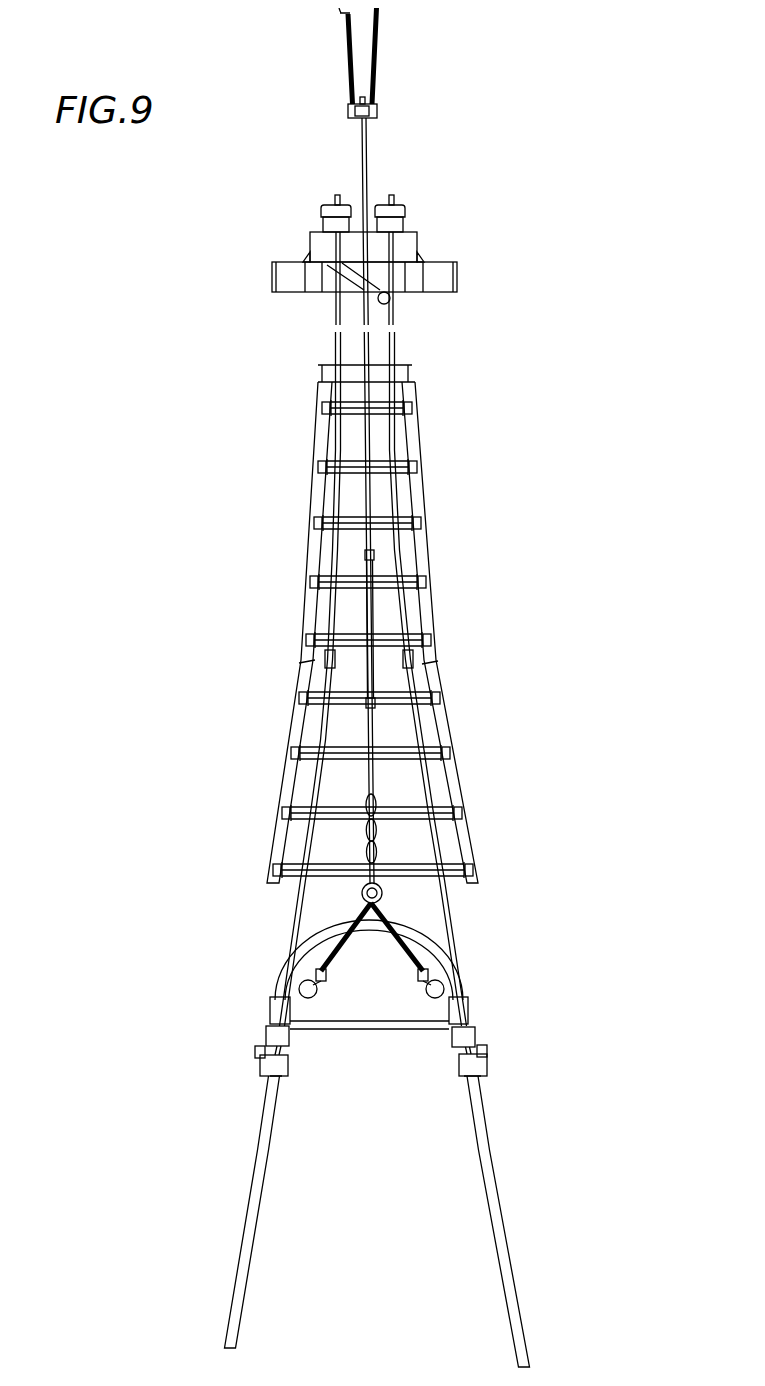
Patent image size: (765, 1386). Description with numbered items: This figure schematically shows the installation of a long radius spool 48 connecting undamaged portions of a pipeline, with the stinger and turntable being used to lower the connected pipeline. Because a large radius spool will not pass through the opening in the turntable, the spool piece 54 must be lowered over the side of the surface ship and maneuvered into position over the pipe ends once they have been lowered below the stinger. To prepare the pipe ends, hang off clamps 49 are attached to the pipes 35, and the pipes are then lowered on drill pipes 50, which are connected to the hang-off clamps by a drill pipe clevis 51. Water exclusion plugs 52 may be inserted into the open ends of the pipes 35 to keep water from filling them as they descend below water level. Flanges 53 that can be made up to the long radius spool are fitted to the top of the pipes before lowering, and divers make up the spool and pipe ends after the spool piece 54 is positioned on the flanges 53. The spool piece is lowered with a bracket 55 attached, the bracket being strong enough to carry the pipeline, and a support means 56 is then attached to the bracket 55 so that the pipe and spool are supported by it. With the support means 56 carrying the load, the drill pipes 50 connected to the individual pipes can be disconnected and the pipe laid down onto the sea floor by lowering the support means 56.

The pipes 35 is at (228, 1310).
The long radius spool 48 is at (298, 962).
The hang off clamps 49 is at (261, 1078).
The drill pipes 50 is at (285, 933).
The drill pipe clevis 51 is at (260, 1048).
The water exclusion plugs 52 is at (279, 1088).
The flanges 53 is at (265, 1037).
The spool piece 54 is at (371, 932).
The bracket 55 is at (382, 1034).
The support means 56 is at (375, 797).